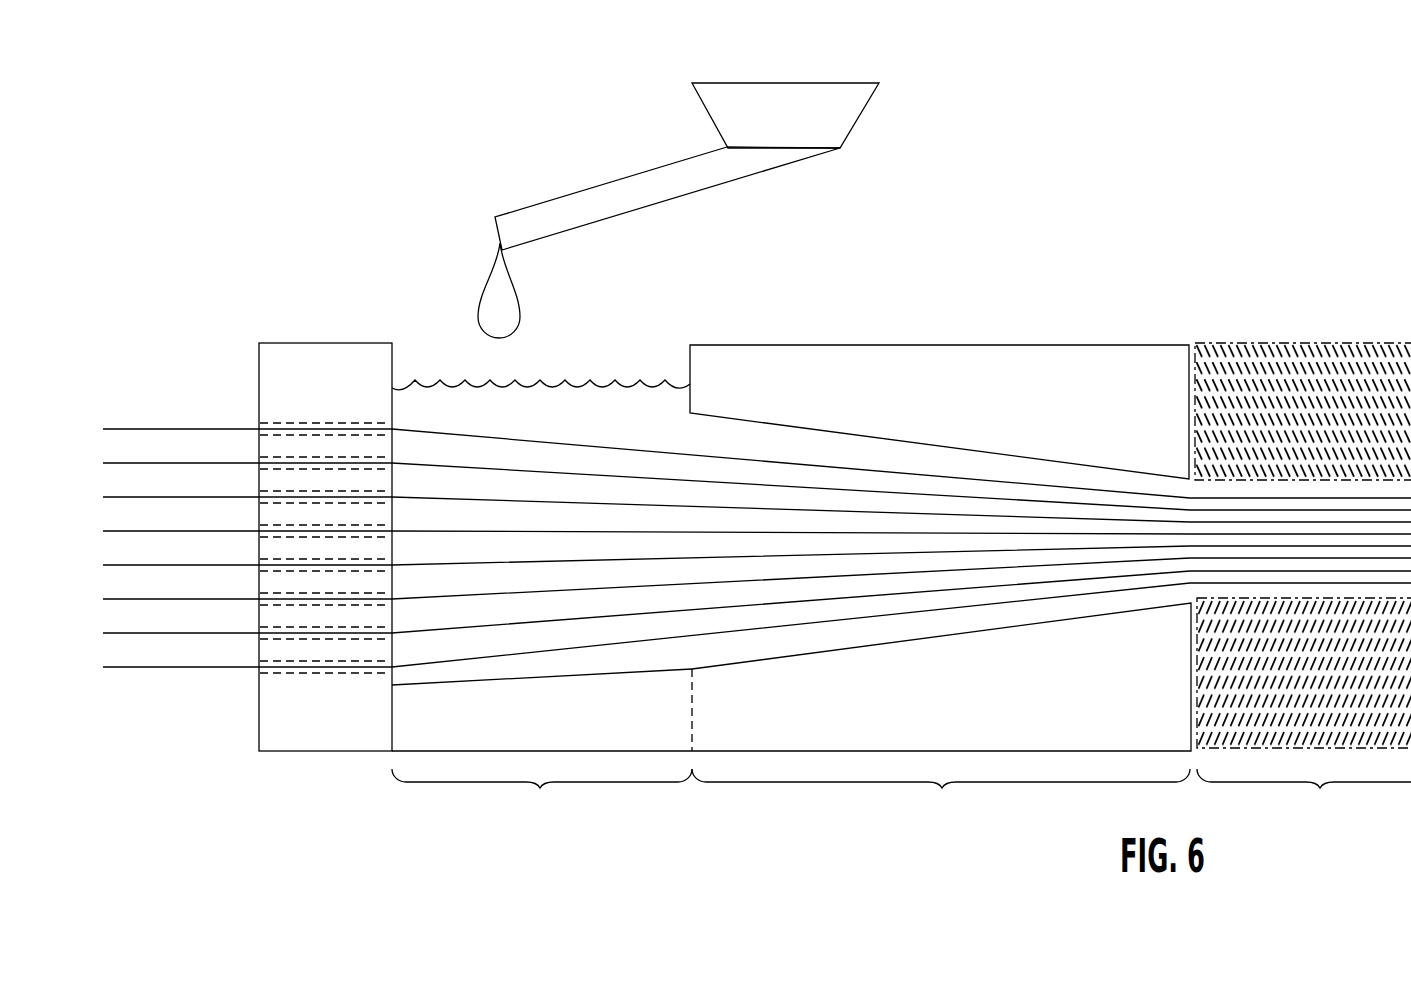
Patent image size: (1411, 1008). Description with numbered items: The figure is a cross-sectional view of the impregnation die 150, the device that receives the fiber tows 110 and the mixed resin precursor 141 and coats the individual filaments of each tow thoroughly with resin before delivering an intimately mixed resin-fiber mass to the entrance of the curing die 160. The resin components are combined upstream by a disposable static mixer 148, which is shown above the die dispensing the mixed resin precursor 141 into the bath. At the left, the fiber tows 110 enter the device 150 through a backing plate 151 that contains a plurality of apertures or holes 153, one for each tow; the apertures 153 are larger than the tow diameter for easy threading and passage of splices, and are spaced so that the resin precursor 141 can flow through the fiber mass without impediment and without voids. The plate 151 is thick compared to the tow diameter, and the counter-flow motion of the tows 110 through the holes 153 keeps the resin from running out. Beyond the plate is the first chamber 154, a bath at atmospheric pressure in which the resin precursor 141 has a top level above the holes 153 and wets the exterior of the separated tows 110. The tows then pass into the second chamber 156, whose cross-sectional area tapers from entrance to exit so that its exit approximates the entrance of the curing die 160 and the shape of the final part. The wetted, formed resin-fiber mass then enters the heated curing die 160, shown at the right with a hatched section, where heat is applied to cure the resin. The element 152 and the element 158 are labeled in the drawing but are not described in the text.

The fiber tows 110 is at (138, 428).
The resin precursor 141 is at (463, 400).
The static mixer 148 is at (563, 205).
The impregnation die 150 is at (789, 268).
The backing plate 151 is at (273, 730).
The resin bath surface 152 is at (561, 358).
The apertures 153 is at (252, 424).
The first chamber 154 is at (475, 733).
The second chamber 156 is at (810, 733).
The upper die block 158 is at (840, 350).
The curing die 160 is at (1293, 355).